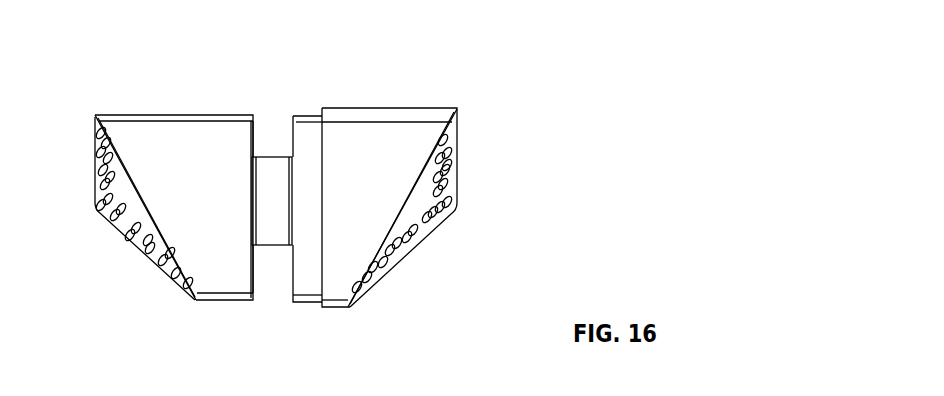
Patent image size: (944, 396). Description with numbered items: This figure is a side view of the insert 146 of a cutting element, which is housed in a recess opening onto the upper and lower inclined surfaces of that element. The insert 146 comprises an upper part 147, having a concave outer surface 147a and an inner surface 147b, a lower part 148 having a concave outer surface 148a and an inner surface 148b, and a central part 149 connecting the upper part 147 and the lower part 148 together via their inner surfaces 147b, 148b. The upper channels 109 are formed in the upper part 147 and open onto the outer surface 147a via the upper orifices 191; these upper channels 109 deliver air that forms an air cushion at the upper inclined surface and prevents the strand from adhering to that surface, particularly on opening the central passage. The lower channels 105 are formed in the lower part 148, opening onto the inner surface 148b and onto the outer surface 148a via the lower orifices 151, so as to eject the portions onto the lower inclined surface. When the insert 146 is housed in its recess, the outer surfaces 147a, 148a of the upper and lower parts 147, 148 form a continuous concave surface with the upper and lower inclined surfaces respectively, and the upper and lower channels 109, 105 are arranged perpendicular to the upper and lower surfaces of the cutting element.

The lower part 148 is at (152, 122).
The concave outer surface 148a is at (120, 192).
The inner surface 148b is at (257, 135).
The central part 149 is at (280, 152).
The insert 146 is at (372, 115).
The upper part 147 is at (428, 112).
The concave outer surface 147a is at (445, 218).
The inner surface 147b is at (292, 280).
The upper orifices 191 is at (450, 166).
The lower channels 105 is at (128, 238).
The lower orifices 151 is at (160, 260).
The upper channels 109 is at (427, 238).